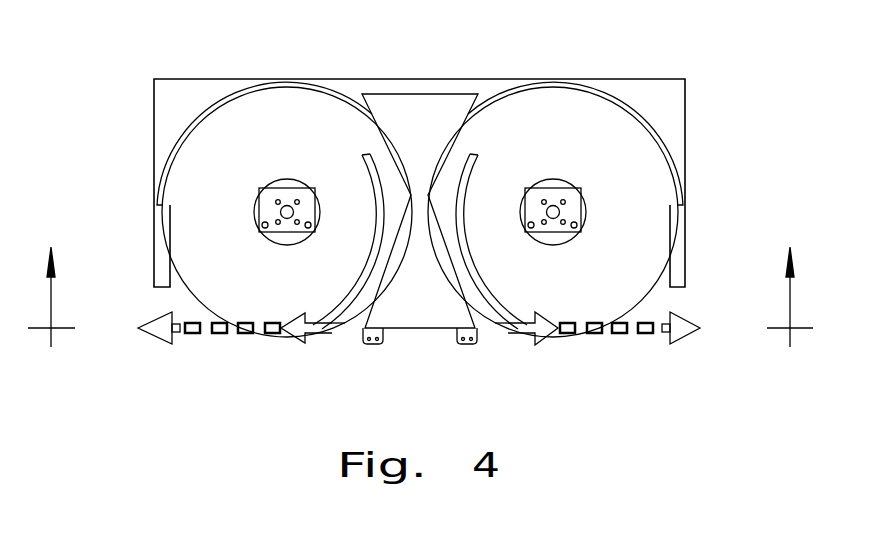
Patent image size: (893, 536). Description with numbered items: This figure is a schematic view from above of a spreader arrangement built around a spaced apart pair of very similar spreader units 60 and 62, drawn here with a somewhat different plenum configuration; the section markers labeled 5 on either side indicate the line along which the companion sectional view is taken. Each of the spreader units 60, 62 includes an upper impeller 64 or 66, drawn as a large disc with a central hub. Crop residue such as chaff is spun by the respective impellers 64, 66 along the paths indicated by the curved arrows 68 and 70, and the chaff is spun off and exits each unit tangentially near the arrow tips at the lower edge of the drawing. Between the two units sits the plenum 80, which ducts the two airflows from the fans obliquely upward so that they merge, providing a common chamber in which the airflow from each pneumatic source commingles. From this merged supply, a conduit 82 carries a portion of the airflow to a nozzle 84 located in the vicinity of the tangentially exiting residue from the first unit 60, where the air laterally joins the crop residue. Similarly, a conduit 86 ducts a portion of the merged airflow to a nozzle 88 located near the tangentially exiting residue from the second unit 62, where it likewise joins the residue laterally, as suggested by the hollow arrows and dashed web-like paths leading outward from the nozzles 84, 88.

The section line 5- 5 is at (420, 284).
The spreader unit 60 is at (218, 66).
The spreader unit 62 is at (632, 66).
The upper impeller 64 is at (225, 219).
The upper impeller 66 is at (643, 239).
The arrow 68 is at (340, 297).
The arrow 70 is at (473, 267).
The plenum 80 is at (405, 347).
The conduit 82 is at (340, 337).
The nozzle 84 is at (307, 343).
The conduit 86 is at (502, 335).
The nozzle 88 is at (543, 342).